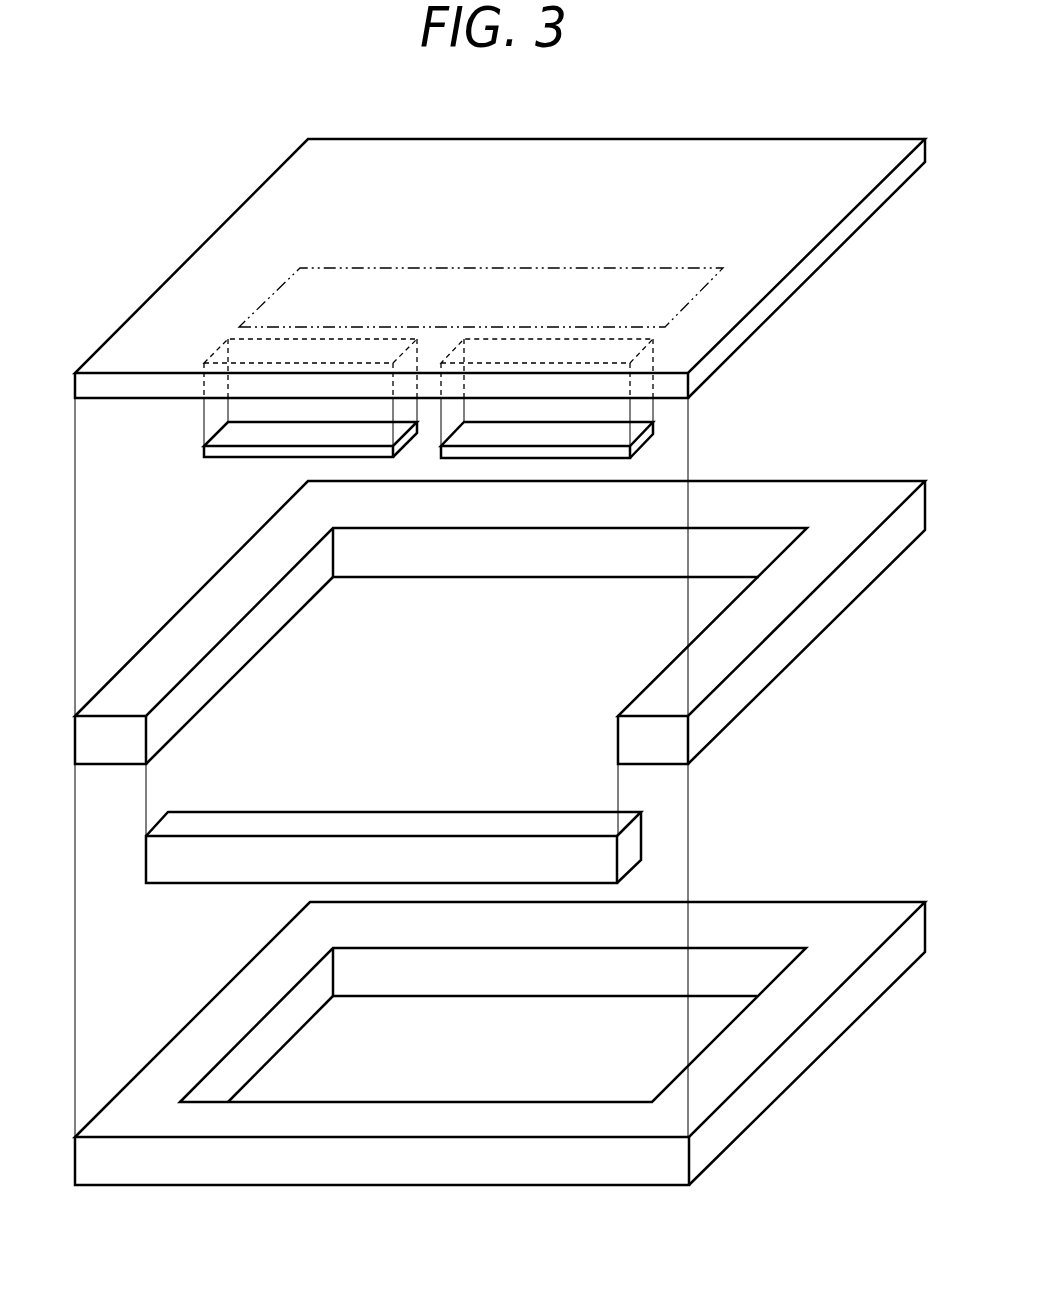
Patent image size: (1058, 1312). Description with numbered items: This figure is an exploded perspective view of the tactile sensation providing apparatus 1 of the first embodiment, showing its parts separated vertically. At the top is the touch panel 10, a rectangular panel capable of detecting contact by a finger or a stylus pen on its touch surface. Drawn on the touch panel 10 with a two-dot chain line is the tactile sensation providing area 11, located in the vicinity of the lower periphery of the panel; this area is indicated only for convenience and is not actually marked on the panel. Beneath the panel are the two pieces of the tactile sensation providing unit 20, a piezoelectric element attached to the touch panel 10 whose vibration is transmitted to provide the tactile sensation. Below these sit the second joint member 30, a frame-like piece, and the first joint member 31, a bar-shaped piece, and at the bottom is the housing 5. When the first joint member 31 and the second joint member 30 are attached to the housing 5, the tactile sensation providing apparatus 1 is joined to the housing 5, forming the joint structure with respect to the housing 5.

The tactile sensation providing apparatus 1 is at (163, 150).
The touch panel 10 is at (650, 146).
The tactile sensation providing area 11 is at (497, 265).
The tactile sensation providing unit 20 is at (252, 453).
The second joint member 30 is at (827, 490).
The first joint member 31 is at (414, 818).
The housing 5 is at (773, 908).